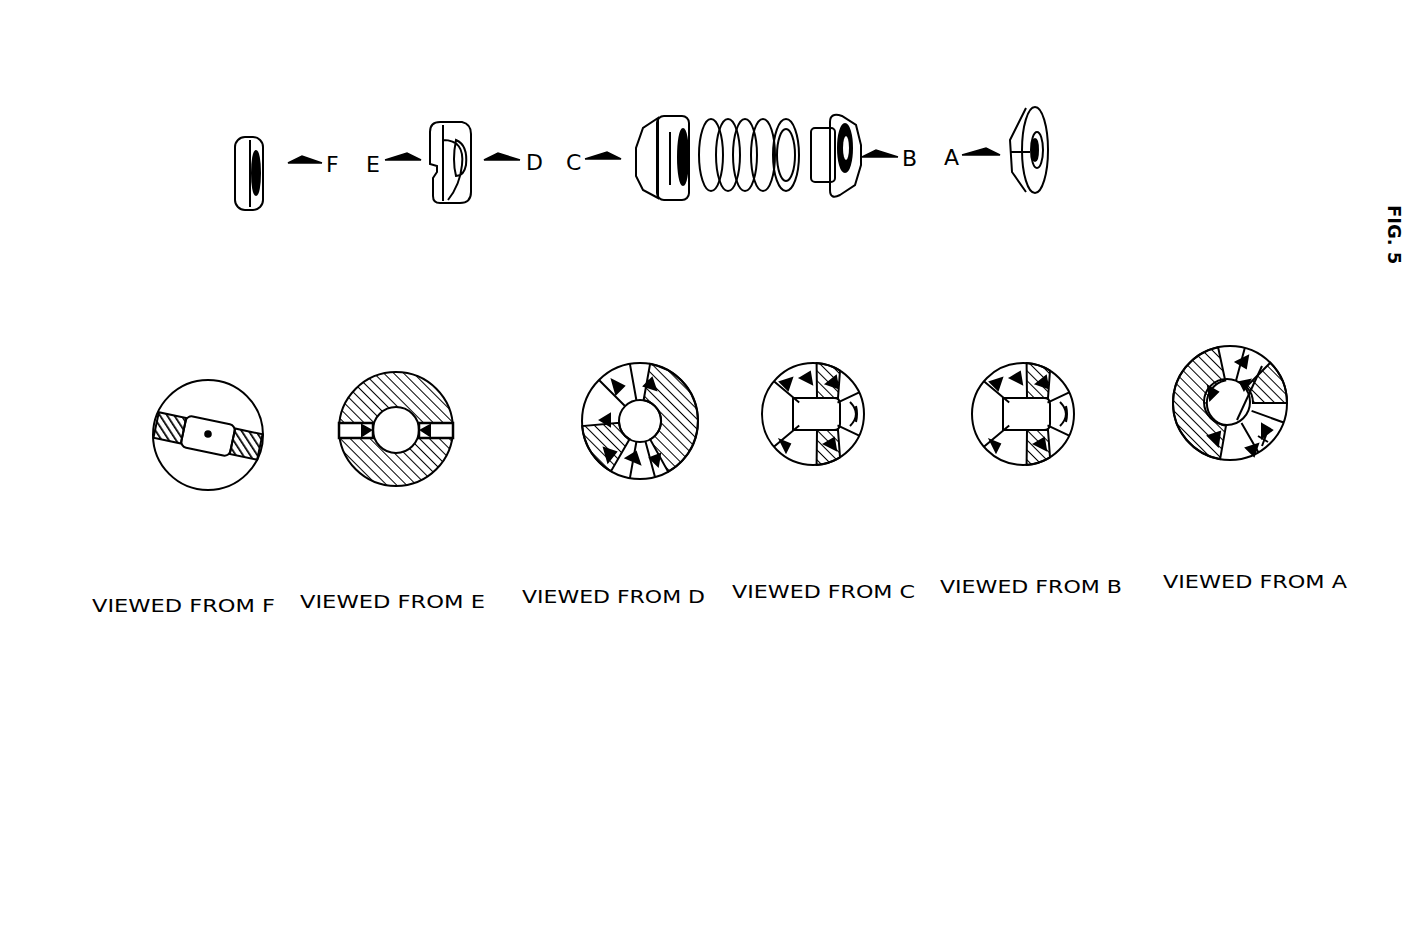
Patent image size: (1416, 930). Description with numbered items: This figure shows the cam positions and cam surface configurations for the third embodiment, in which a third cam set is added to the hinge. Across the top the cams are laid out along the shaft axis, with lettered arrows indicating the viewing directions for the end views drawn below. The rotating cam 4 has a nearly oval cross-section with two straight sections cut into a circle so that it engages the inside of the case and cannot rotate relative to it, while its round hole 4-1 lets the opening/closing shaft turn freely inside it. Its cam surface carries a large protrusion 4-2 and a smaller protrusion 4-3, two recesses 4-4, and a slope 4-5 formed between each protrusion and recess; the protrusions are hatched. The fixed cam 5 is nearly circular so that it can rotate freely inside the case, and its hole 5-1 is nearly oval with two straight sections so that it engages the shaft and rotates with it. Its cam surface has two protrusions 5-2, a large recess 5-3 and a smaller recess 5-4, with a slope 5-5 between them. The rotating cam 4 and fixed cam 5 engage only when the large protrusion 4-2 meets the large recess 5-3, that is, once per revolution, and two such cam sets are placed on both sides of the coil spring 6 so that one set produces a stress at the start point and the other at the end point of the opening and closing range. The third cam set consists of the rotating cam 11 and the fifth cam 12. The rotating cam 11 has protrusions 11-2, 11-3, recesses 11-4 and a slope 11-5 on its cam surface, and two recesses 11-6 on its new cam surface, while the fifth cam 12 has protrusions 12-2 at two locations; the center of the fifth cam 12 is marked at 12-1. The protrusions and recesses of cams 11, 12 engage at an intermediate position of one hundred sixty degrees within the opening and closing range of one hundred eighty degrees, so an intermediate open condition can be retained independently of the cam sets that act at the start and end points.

The rotating cam 4 is at (986, 187).
The hole 4-1 is at (1026, 108).
The protrusion 4-2 is at (1277, 314).
The protrusion 4-3 is at (1283, 422).
The recess 4-4 is at (1240, 357).
The slope 4-5 is at (1237, 462).
The fixed cam 5 is at (665, 192).
The hole 5-1 is at (830, 118).
The protrusion 5-2 is at (827, 363).
The recess 5-3 is at (780, 380).
The recess 5-4 is at (924, 479).
The slope 5-5 is at (800, 465).
The coil spring 6 is at (740, 192).
The rotating cam 11 is at (457, 125).
The protrusion 11-2 is at (653, 370).
The protrusion 11-3 is at (590, 453).
The recess 11-4 is at (605, 382).
The slope 11-5 is at (683, 470).
The recess 11-6 is at (440, 335).
The fifth cam 12 is at (258, 140).
The cap disc center 12-1 is at (206, 434).
The protrusion 12-2 is at (160, 418).